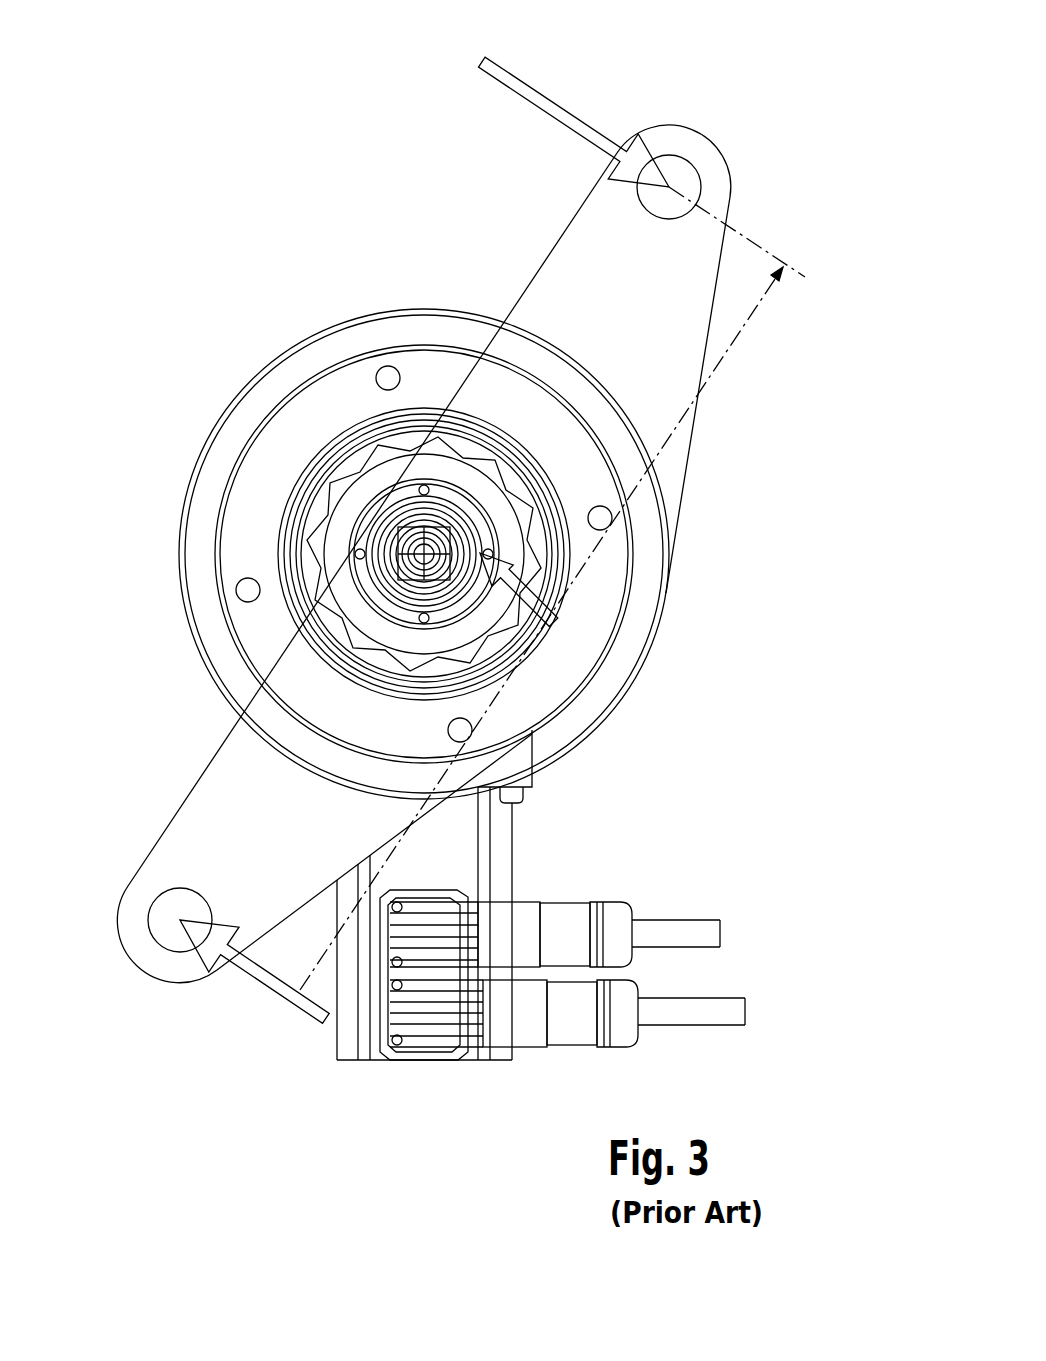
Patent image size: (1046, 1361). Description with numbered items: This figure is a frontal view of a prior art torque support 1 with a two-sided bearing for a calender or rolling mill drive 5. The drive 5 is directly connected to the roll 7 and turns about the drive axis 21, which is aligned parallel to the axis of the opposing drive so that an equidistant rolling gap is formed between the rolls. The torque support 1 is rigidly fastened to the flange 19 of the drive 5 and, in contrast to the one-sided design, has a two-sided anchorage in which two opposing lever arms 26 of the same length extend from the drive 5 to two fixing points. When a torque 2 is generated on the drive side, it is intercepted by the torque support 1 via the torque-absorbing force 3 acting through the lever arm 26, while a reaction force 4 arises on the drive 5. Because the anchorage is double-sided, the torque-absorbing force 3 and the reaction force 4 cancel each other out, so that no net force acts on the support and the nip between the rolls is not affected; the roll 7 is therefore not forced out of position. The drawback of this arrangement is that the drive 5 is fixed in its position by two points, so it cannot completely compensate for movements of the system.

The torque support 1 is at (308, 103).
The torque 2 is at (353, 515).
The force 3 is at (517, 84).
The reaction force 4 is at (267, 985).
The drive 5 is at (420, 190).
The roll 7 is at (355, 318).
The flange 19 is at (300, 378).
The drive axis 21 is at (436, 560).
The lever arm 26 is at (714, 368).